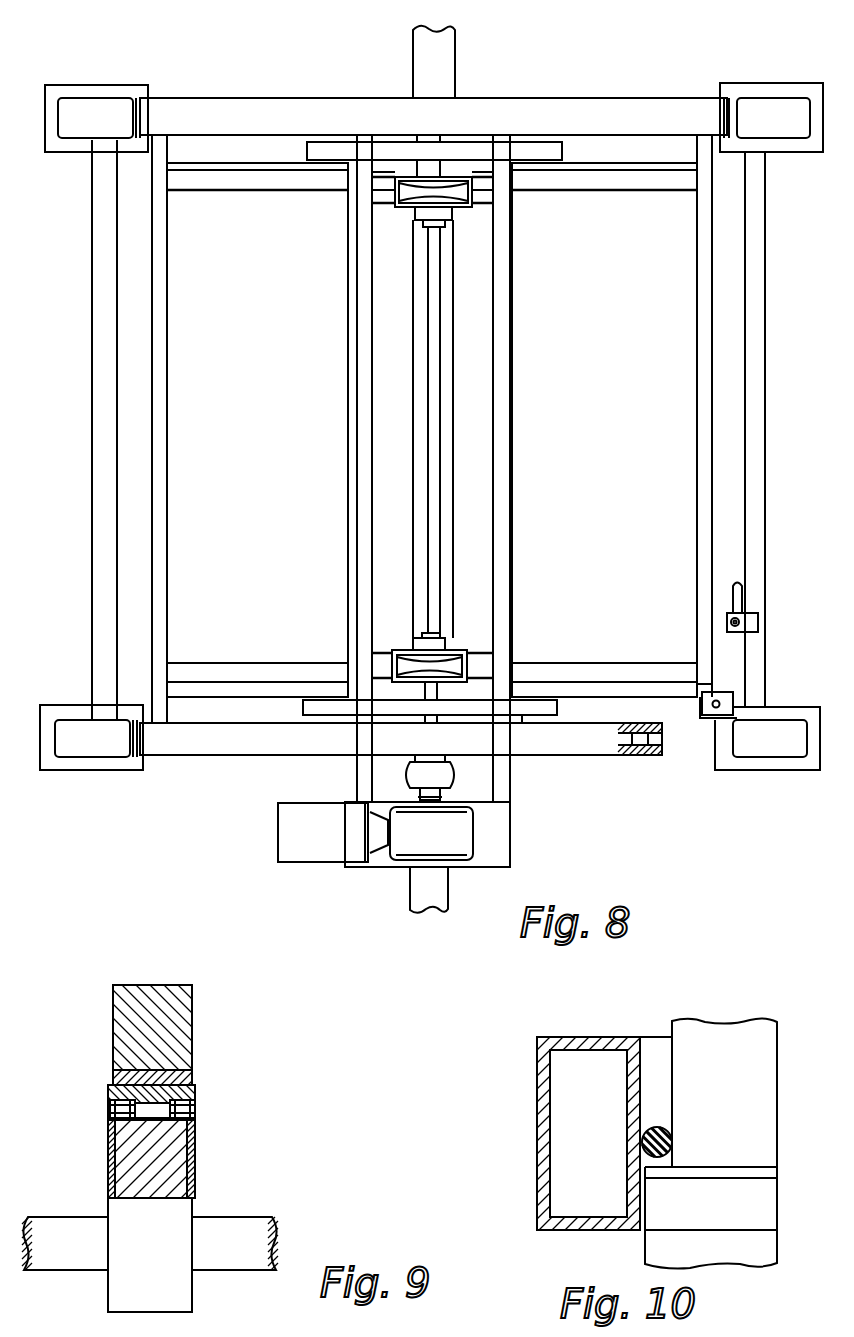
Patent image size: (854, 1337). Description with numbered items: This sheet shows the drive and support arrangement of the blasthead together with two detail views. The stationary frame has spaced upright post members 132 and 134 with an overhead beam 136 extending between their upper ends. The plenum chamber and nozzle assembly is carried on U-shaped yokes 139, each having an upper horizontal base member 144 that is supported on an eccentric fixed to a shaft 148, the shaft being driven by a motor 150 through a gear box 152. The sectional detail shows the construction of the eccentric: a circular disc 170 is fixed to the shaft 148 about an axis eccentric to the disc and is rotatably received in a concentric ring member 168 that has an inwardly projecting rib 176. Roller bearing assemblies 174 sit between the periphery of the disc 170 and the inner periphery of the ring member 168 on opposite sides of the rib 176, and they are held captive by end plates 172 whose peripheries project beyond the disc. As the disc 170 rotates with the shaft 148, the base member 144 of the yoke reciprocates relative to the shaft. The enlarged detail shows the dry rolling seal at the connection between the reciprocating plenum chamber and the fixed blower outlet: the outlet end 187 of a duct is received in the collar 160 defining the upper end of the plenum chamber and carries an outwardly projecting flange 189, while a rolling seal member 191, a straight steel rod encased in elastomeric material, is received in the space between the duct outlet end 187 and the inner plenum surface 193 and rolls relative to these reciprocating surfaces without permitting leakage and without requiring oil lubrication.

In FIG. 8, the upright post member 132 is at (752, 758).
In FIG. 8, the upright post member 134 is at (112, 100).
In FIG. 8, the overhead beam 136 is at (287, 742).
In FIG. 8, the yoke 139 is at (318, 172).
In FIG. 8, the base member 144 is at (545, 148).
In FIG. 9, the base member 144 is at (155, 985).
In FIG. 8, the shaft 148 is at (435, 480).
In FIG. 9, the shaft 148 is at (232, 1256).
In FIG. 8, the motor 150 is at (298, 847).
In FIG. 8, the gear box 152 is at (462, 840).
In FIG. 10, the collar 160 is at (540, 1130).
In FIG. 9, the ring member 168 is at (190, 1093).
In FIG. 9, the circular disc 170 is at (175, 1190).
In FIG. 9, the end plate 172 is at (108, 1162).
In FIG. 9, the roller bearing assembly 174 is at (113, 1110).
In FIG. 9, the rib 176 is at (130, 1083).
In FIG. 10, the outlet end 187 is at (672, 1025).
In FIG. 10, the flange 189 is at (752, 1172).
In FIG. 10, the rolling seal member 191 is at (668, 1128).
In FIG. 10, the reciprocating surface 193 is at (642, 1072).